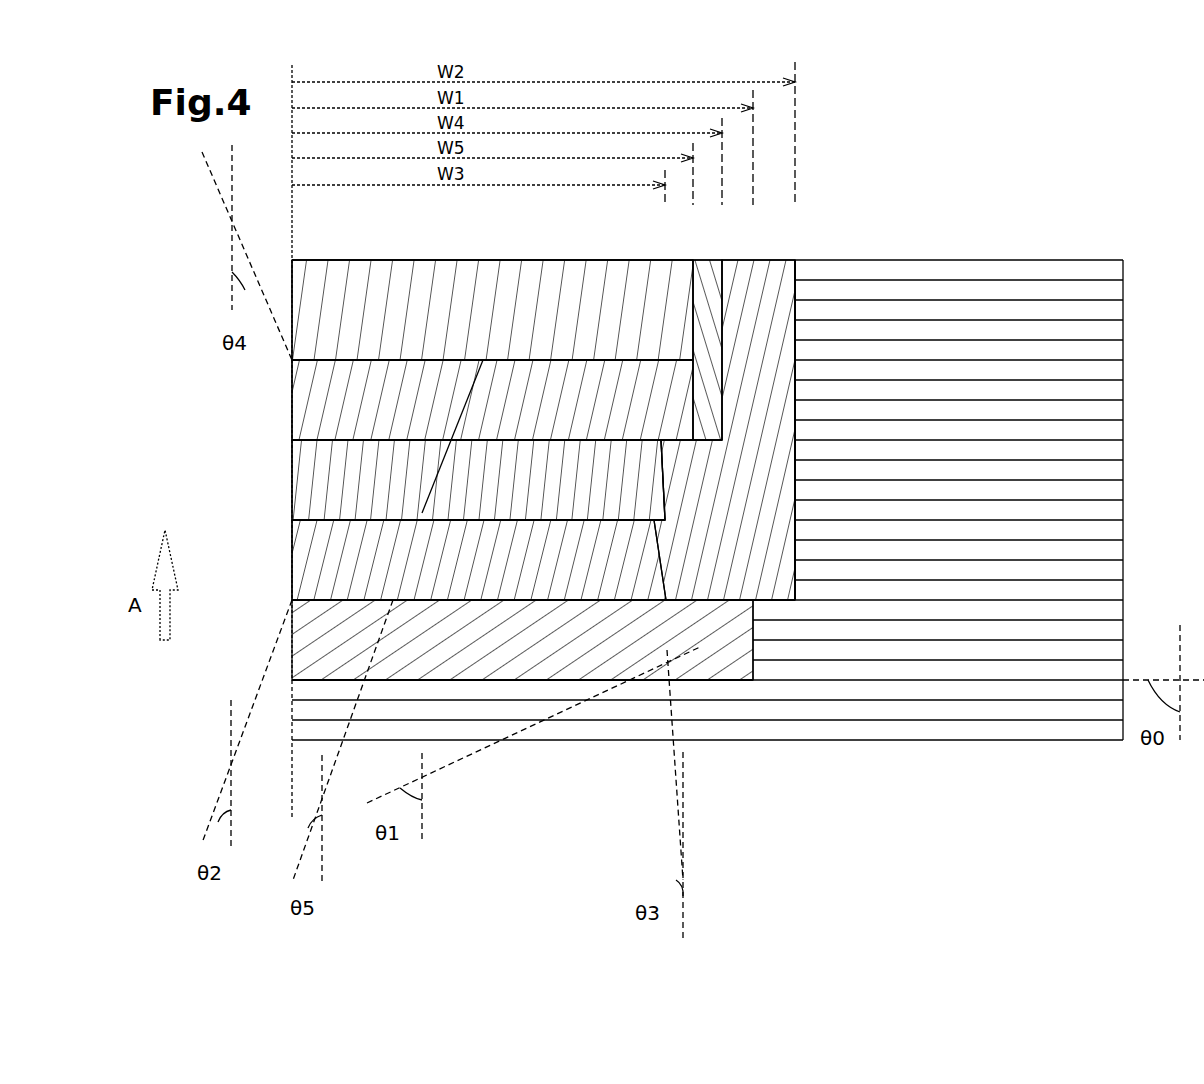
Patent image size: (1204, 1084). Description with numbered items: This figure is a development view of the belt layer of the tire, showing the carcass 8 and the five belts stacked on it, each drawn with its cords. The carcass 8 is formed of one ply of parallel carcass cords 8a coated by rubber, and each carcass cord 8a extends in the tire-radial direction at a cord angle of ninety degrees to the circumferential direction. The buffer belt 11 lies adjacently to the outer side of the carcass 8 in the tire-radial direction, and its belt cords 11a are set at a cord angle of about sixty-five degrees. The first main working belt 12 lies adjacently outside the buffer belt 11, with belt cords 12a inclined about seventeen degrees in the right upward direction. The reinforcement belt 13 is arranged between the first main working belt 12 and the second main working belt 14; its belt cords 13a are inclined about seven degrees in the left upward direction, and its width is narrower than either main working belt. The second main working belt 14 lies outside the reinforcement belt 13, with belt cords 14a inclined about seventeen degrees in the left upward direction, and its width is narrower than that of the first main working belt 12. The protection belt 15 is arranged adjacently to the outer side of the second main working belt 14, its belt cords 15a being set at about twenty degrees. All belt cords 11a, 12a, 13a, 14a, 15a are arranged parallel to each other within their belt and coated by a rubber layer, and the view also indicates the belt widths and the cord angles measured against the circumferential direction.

The carcass 8 is at (1057, 728).
The carcass cord 8a is at (970, 730).
The buffer belt 11 is at (715, 680).
The belt cord 11a is at (688, 680).
The first main working belt 12 is at (296, 530).
The belt cord 12a is at (297, 558).
The reinforcement belt 13 is at (296, 450).
The belt cord 13a is at (297, 476).
The second main working belt 14 is at (745, 310).
The belt cord 14a is at (730, 285).
The protection belt 15 is at (368, 278).
The belt cord 15a is at (422, 282).